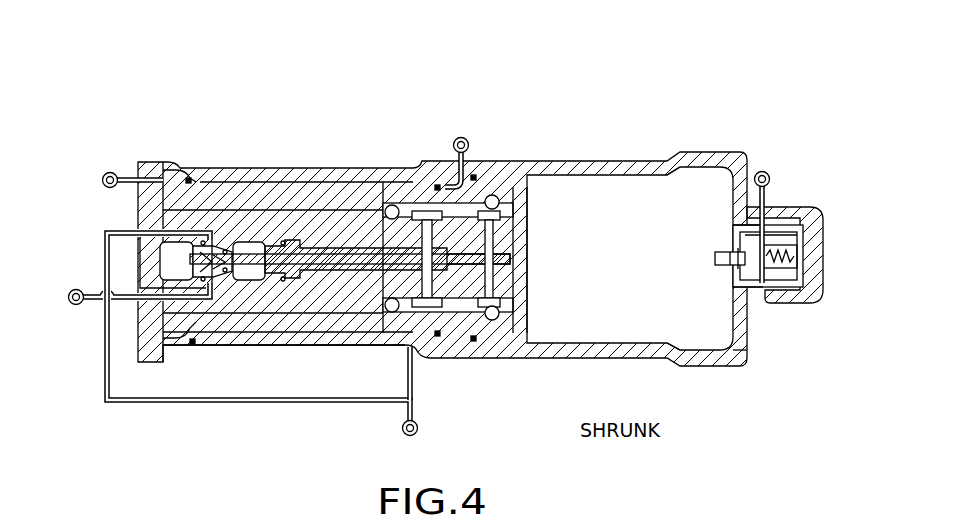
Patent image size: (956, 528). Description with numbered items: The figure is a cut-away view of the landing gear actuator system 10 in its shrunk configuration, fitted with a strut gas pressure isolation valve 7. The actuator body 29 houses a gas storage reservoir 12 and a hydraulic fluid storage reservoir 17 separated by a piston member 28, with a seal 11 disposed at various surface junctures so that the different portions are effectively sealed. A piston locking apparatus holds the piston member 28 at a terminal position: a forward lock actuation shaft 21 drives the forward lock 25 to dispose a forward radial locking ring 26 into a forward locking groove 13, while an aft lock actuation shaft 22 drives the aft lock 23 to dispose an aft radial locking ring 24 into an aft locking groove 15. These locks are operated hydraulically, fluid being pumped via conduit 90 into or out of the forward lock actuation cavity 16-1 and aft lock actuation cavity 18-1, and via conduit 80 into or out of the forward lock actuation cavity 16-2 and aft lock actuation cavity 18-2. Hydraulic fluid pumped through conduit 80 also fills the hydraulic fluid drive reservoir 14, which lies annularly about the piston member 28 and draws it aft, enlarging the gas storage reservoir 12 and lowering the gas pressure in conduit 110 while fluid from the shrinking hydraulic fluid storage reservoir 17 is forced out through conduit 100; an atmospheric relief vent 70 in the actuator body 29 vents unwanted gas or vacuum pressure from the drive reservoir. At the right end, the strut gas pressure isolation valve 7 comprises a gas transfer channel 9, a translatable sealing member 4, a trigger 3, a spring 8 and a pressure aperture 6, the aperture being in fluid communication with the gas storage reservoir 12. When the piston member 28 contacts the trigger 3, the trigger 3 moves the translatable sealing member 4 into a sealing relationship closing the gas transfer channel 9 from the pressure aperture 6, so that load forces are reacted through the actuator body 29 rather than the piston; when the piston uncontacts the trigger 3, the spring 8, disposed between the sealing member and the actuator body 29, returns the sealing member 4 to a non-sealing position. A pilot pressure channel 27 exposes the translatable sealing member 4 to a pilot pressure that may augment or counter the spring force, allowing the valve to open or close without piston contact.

The landing gear actuator system 10 is at (512, 62).
The atmospheric relief vent 70 is at (110, 172).
The seal 11 is at (180, 237).
The aft lock actuation shaft 22 is at (273, 240).
The aft lock actuation cavity 18-1 is at (307, 238).
The aft radial locking ring 24 is at (386, 208).
The aft lock 23 is at (413, 230).
The hydraulic fluid storage reservoir 17 is at (456, 195).
The conduit 100 is at (463, 138).
The forward radial locking ring 26 is at (513, 202).
The conduit 110 is at (762, 171).
The strut gas pressure isolation valve 7 is at (797, 173).
The pilot pressure channel 27 is at (810, 213).
The forward lock actuation shaft 21 is at (155, 236).
The forward lock actuation cavity 16-2 is at (167, 265).
The forward lock 25 is at (518, 232).
The gas transfer channel 9 is at (737, 223).
The trigger 3 is at (715, 258).
The conduit 90 is at (63, 303).
The piston member 28 is at (522, 290).
The pressure aperture 6 is at (730, 286).
The translatable sealing member 4 is at (767, 266).
The spring 8 is at (780, 275).
The actuator body 29 is at (737, 353).
The aft locking groove 15 is at (187, 327).
The forward lock actuation cavity 16-1 is at (223, 277).
The hydraulic fluid drive reservoir 14 is at (253, 335).
The aft lock actuation cavity 18-2 is at (245, 277).
The forward locking groove 13 is at (495, 322).
The gas storage reservoir 12 is at (550, 318).
The conduit 80 is at (403, 433).